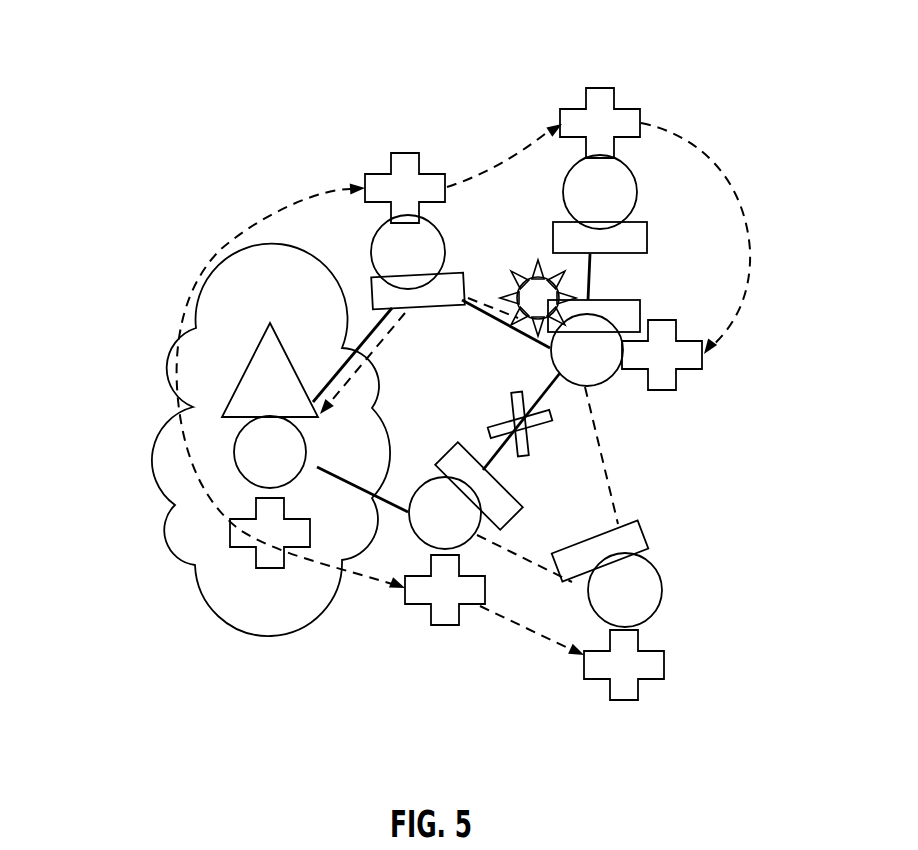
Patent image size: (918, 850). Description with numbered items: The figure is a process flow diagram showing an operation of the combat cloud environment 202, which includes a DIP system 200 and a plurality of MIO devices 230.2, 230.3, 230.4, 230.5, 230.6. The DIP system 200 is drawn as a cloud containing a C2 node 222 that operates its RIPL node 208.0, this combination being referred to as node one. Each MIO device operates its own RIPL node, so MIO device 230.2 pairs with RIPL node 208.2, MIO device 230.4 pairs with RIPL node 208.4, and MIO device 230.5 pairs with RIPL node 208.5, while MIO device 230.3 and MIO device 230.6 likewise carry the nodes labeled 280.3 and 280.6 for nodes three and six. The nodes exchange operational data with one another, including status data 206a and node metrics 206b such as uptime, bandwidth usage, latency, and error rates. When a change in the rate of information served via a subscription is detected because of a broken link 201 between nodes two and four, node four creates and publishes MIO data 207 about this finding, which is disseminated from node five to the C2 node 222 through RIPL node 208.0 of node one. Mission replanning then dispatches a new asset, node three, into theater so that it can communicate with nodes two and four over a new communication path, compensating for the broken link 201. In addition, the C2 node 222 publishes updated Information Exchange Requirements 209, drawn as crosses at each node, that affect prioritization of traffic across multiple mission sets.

The DIP system 200 is at (148, 570).
The broken link 201 is at (547, 417).
The combat cloud environment 202 is at (181, 50).
The status data 206a is at (487, 300).
The node metrics 206b is at (190, 470).
The MIO data 207 is at (533, 288).
The RIPL node 208.0 is at (234, 455).
The RIPL node 208.2 is at (436, 478).
The RIPL node 208.4 is at (553, 365).
The RIPL node 208.5 is at (372, 258).
The Information Exchange Requirements 209 is at (405, 152).
The C2 node 222 is at (250, 368).
The MIO device 230.2 is at (490, 500).
The MIO device 230.3 is at (645, 532).
The MIO device 230.4 is at (622, 307).
The MIO device 230.5 is at (425, 310).
The MIO device 230.6 is at (625, 242).
The network node 3 280.3 is at (661, 586).
The network node 6 280.6 is at (637, 192).